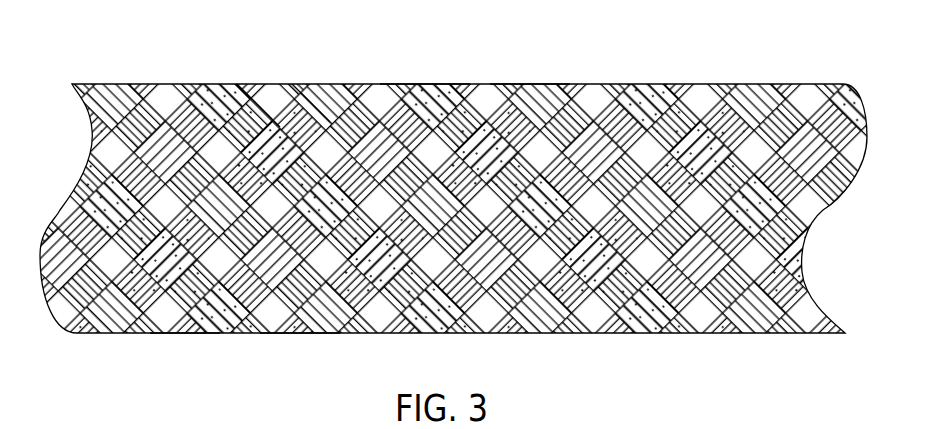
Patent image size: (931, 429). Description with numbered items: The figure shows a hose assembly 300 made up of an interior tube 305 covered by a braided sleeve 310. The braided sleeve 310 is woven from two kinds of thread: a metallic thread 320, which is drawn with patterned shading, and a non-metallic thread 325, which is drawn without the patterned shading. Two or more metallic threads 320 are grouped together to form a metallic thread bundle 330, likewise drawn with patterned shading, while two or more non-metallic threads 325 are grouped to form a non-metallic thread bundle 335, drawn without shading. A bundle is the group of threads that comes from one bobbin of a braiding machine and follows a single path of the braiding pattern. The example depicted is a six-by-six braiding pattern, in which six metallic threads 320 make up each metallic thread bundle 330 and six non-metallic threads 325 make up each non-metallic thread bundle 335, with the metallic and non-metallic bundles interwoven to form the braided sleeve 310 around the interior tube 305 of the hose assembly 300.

The hose assembly 300 is at (748, 66).
The interior tube 305 is at (183, 334).
The braided sleeve 310 is at (292, 342).
The metallic thread 320 is at (236, 84).
The non-metallic thread 325 is at (290, 84).
The metallic thread bundle 330 is at (427, 80).
The non-metallic thread bundle 335 is at (532, 80).